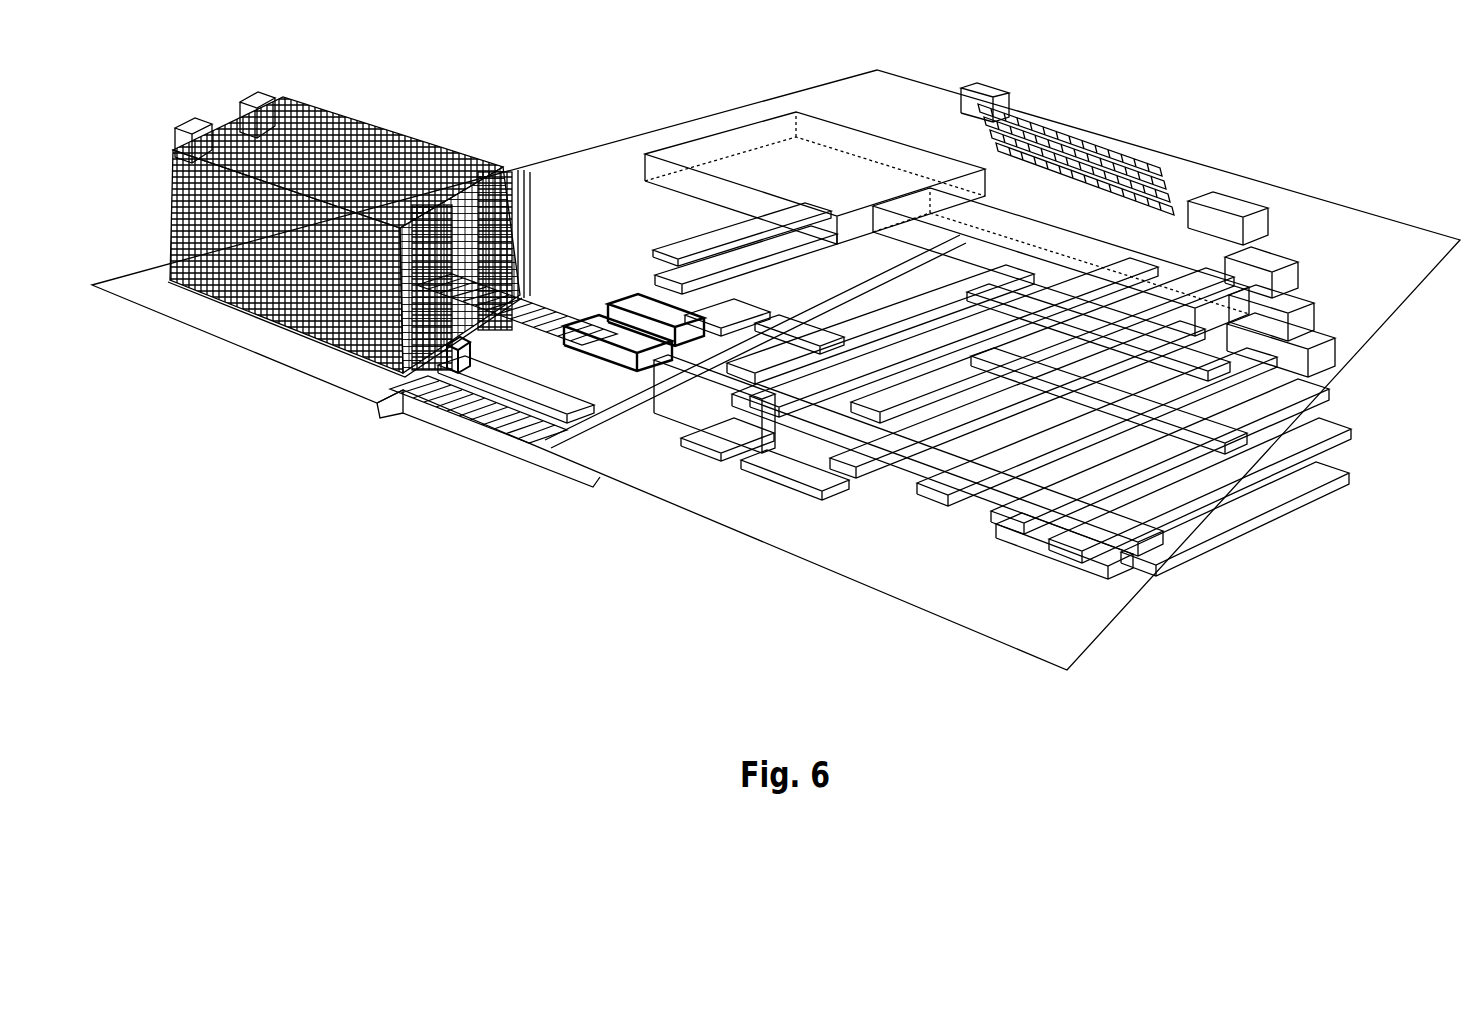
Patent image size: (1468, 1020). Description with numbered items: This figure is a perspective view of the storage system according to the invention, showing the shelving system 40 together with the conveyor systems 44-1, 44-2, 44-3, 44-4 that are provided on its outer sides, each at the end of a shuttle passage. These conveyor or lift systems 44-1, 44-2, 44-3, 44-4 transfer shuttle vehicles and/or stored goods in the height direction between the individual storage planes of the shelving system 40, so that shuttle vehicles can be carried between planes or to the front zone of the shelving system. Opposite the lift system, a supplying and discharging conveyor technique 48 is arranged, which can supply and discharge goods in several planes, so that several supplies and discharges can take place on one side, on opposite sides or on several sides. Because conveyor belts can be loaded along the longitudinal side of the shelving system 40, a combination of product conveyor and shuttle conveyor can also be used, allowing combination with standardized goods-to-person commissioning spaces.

The shelving system 40 is at (368, 108).
The conveyor system 44-1 is at (258, 92).
The conveyor system 44-2 is at (512, 172).
The conveyor system 44-3 is at (200, 118).
The conveyor system 44-4 is at (440, 207).
The supplying and discharging conveyor technique 48 is at (540, 437).